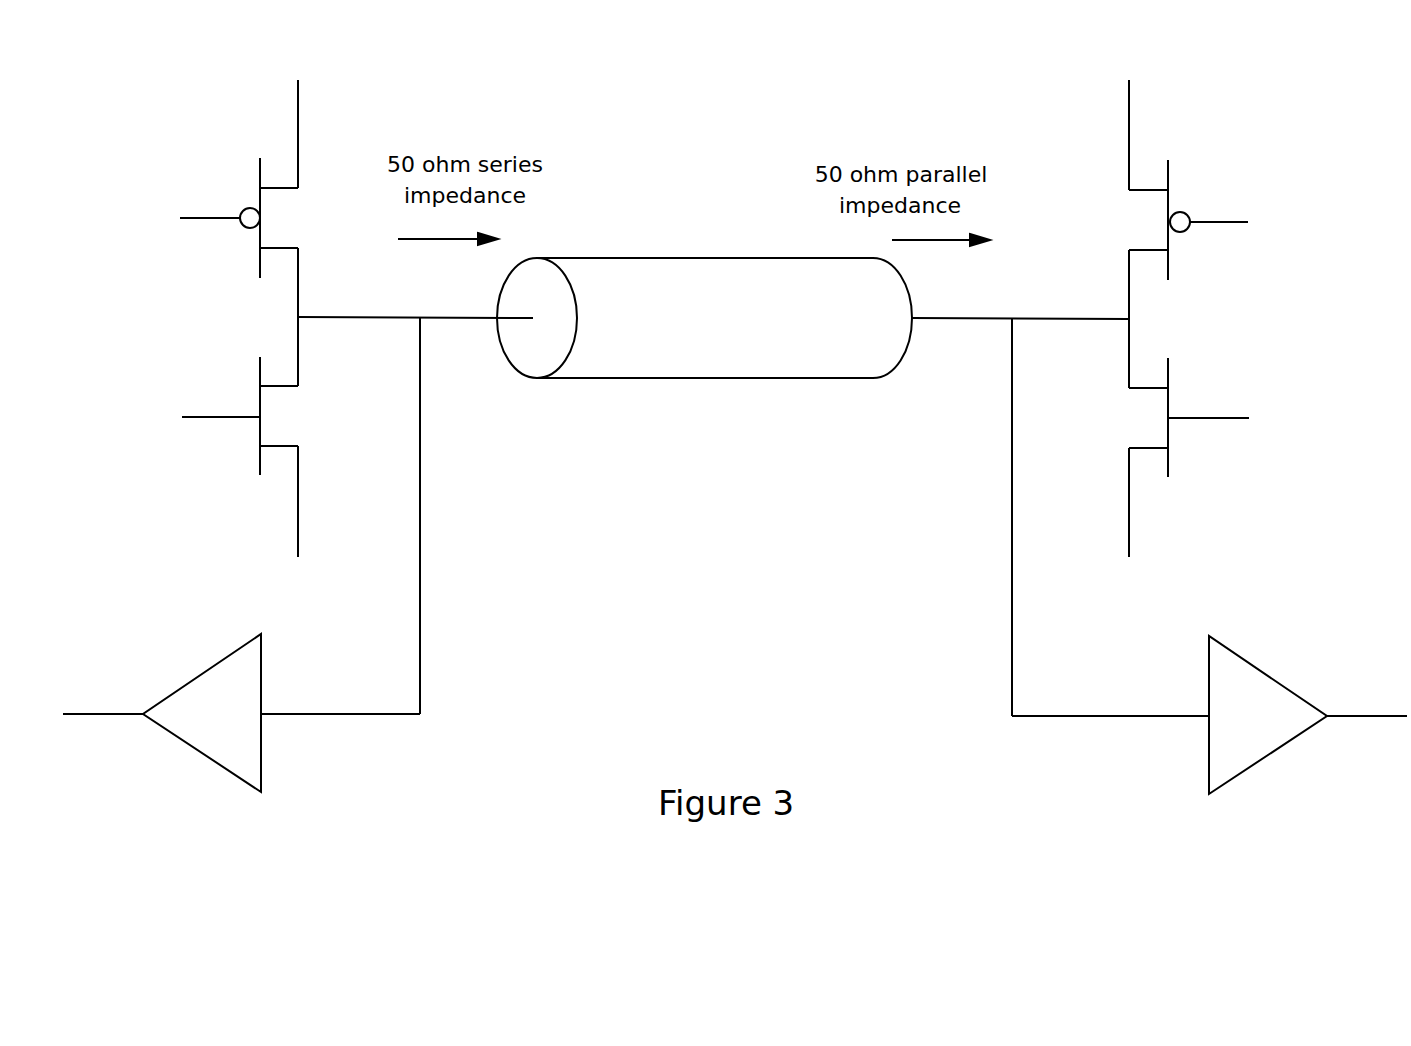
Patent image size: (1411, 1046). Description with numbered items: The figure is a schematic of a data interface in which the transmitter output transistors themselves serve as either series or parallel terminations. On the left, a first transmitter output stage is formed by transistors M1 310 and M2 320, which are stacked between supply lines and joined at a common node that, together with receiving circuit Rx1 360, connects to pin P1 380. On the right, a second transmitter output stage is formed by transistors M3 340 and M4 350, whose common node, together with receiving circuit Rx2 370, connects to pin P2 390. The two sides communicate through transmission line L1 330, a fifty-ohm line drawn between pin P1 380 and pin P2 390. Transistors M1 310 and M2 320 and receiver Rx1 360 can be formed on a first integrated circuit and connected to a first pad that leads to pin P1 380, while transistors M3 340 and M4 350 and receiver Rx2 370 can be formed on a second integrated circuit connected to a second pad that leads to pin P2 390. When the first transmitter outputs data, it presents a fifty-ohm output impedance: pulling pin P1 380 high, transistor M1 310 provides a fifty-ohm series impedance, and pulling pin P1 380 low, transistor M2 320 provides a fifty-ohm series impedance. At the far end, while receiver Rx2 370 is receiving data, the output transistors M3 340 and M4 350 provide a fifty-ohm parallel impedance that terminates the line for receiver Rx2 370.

The transistor M1 310 is at (267, 198).
The transistor M2 320 is at (268, 437).
The transmission line L1 330 is at (704, 318).
The transistor M3 340 is at (1160, 199).
The transistor M4 350 is at (1163, 438).
The receiving circuit Rx1 360 is at (162, 713).
The receiving circuit Rx2 370 is at (1308, 715).
The pin P1 380 is at (366, 515).
The pin P2 390 is at (1080, 517).